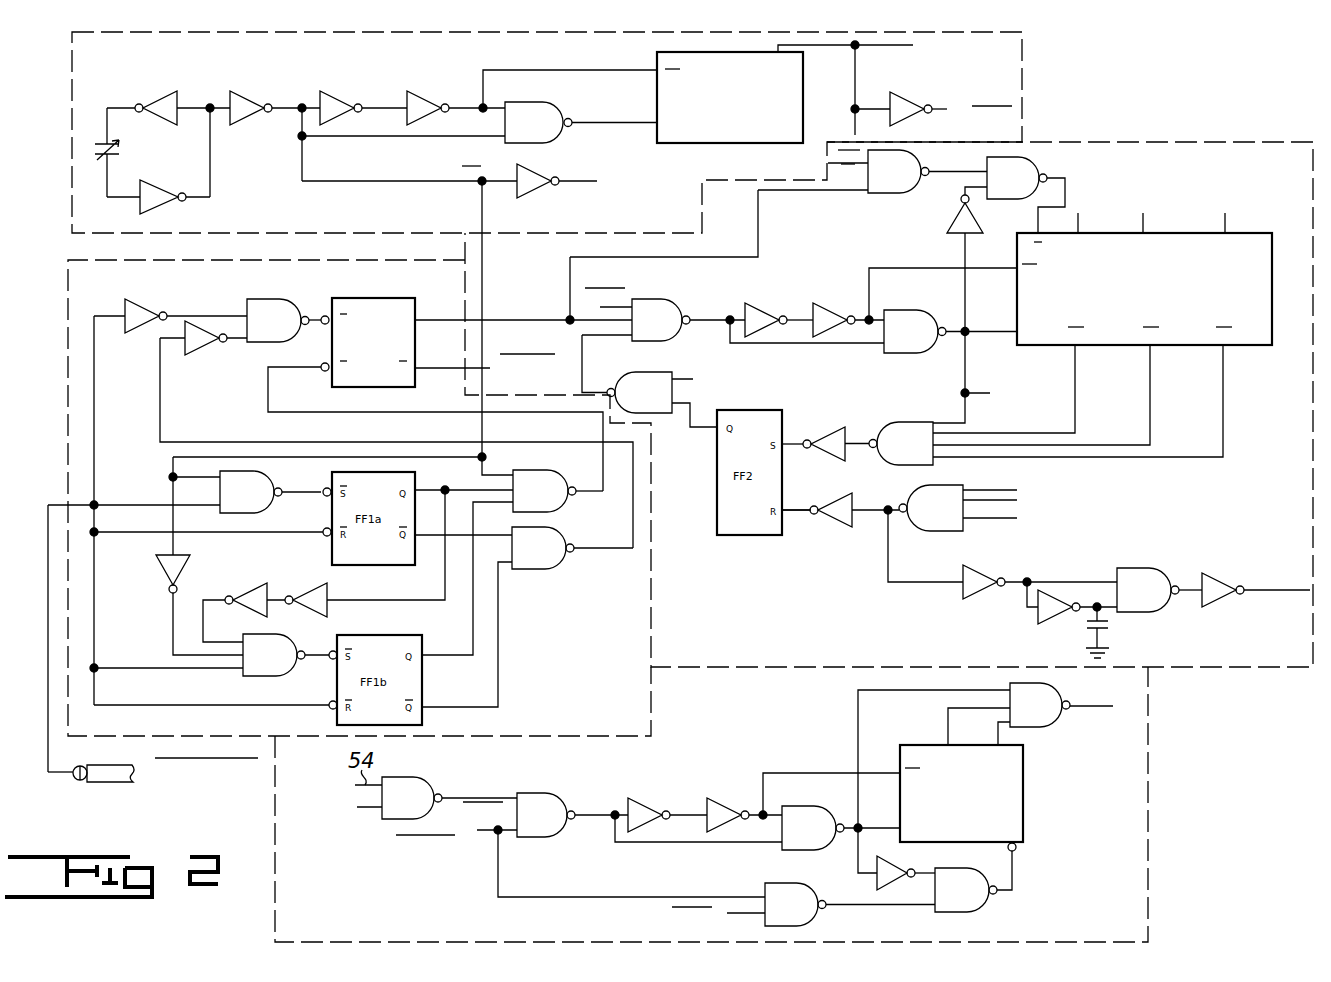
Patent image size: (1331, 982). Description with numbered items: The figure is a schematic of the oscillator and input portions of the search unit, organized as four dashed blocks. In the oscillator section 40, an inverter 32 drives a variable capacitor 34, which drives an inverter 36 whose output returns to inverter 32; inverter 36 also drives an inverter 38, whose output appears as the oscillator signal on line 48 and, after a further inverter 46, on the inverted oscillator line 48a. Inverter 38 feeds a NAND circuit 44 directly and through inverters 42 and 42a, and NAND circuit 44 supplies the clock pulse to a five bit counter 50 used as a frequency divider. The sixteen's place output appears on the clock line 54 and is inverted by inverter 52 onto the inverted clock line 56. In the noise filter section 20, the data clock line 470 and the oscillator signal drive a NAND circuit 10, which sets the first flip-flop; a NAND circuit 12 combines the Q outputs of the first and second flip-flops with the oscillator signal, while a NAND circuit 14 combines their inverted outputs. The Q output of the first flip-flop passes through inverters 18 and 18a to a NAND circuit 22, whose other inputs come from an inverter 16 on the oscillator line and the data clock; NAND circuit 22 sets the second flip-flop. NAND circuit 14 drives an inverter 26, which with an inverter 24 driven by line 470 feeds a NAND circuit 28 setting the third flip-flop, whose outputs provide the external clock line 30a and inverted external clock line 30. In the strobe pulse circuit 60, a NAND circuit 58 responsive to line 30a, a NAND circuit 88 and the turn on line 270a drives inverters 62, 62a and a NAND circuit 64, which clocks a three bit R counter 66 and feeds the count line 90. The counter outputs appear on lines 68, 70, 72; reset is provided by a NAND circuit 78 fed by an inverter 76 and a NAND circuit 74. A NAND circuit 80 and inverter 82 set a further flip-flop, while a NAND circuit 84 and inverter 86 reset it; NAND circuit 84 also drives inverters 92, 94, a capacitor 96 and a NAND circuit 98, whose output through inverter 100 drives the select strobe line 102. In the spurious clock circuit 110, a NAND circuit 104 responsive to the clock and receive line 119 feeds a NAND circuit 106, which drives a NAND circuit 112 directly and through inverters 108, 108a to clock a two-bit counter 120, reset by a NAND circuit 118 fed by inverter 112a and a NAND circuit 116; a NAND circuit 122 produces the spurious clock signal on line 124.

The NAND circuit 10 is at (262, 513).
The NAND circuit 12 is at (563, 512).
The NAND circuit 14 is at (552, 570).
The inverter 16 is at (160, 568).
The inverter 18 is at (318, 587).
The inverter 18a is at (258, 585).
The noise filter section 20 is at (68, 392).
The NAND circuit 22 is at (280, 677).
The inverter 24 is at (142, 302).
The inverter 26 is at (203, 355).
The NAND circuit 28 is at (302, 289).
The inverted external clock line 30 is at (450, 354).
The external clock line 30a is at (440, 320).
The inverter 32 is at (157, 93).
The variable capacitor 34 is at (121, 152).
The inverter 36 is at (165, 213).
The inverter 38 is at (250, 122).
The oscillator section 40 is at (1025, 80).
The inverter 42 is at (340, 95).
The inverter 42a is at (428, 95).
The NAND circuit 44 is at (545, 100).
The inverter 46 is at (546, 158).
The oscillator line 48 is at (585, 181).
The inverted oscillator line 48a is at (430, 181).
The five bit counter 50 is at (753, 143).
The inverter 52 is at (905, 92).
The clock line 54 is at (880, 45).
The inverted clock line 56 is at (947, 109).
The NAND circuit 58 is at (675, 302).
The strobe pulse circuit 60 is at (1155, 140).
The inverter 62 is at (760, 305).
The inverter 62a is at (830, 305).
The NAND circuit 64 is at (905, 353).
The three bit R counter 66 is at (1258, 345).
The R1 line 68 is at (1080, 222).
The R2 line 70 is at (1145, 222).
The R4 line 72 is at (1227, 222).
The NAND circuit 74 is at (900, 193).
The inverter 76 is at (948, 225).
The NAND circuit 78 is at (1040, 160).
The NAND circuit 80 is at (893, 422).
The inverter 82 is at (830, 430).
The NAND circuit 84 is at (920, 532).
The inverter 86 is at (828, 527).
The NAND circuit 88 is at (668, 413).
The count line 90 is at (990, 393).
The inverter 92 is at (985, 598).
The inverter 94 is at (1055, 623).
The capacitor 96 is at (1110, 627).
The NAND circuit 98 is at (1150, 568).
The inverter 100 is at (1225, 575).
The select strobe line 102 is at (1265, 590).
The NAND circuit 104 is at (420, 777).
The NAND circuit 106 is at (550, 793).
The inverter 108 is at (645, 800).
The inverter 108a is at (725, 800).
The spurious clock circuit 110 is at (1152, 790).
The NAND circuit 112 is at (783, 848).
The inverter 112a is at (877, 885).
The NAND circuit 116 is at (808, 926).
The NAND circuit 118 is at (980, 912).
The receive line 119 is at (365, 810).
The two-bit counter 120 is at (1023, 808).
The NAND circuit 122 is at (1050, 683).
The spurious clock line 124 is at (1095, 708).
The turn on line 270a is at (745, 920).
The data clock line 470 is at (52, 776).